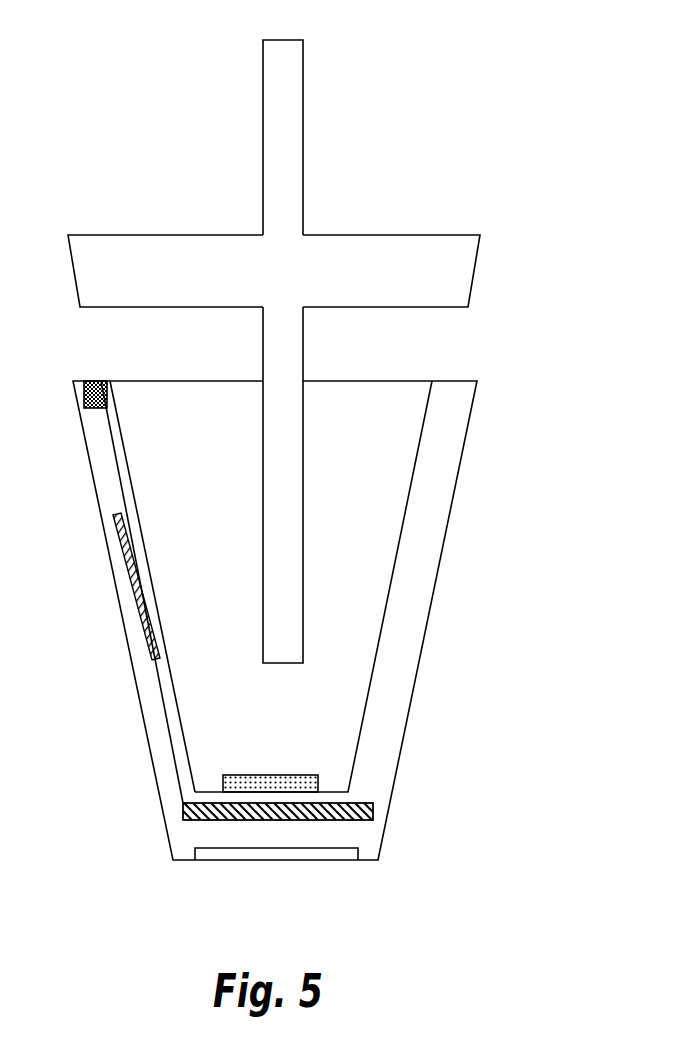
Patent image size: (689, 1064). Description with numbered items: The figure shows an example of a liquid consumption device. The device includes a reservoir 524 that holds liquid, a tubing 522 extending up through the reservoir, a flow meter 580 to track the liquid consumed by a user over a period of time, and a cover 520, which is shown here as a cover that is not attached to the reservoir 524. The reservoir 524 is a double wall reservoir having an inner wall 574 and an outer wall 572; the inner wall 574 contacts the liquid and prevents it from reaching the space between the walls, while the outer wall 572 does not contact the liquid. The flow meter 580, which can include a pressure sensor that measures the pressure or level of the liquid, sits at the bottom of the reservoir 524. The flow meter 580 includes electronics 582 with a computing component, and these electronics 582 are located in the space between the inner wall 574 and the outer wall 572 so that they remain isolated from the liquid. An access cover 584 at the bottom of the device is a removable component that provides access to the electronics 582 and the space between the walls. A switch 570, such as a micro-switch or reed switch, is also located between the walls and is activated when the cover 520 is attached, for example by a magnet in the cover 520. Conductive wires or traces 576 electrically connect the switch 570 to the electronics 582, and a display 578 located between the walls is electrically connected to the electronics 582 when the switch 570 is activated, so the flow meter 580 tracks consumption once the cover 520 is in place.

The cover 520 is at (120, 235).
The tubing 522 is at (303, 63).
The reservoir 524 is at (203, 388).
The switch 570 is at (88, 381).
The outer wall 572 is at (467, 423).
The inner wall 574 is at (421, 411).
The conductive wires or traces 576 is at (120, 492).
The display 578 is at (130, 568).
The flow meter 580 is at (268, 770).
The electronics 582 is at (373, 810).
The access cover 584 is at (360, 858).